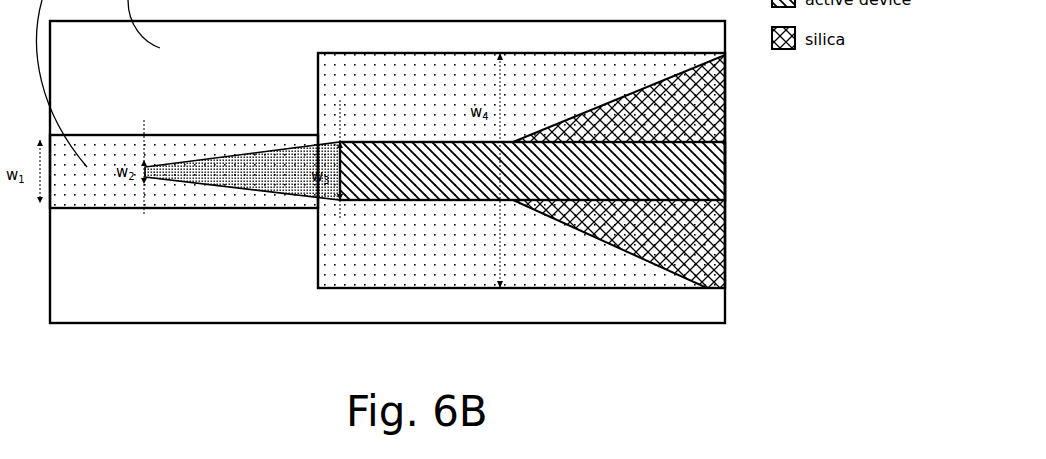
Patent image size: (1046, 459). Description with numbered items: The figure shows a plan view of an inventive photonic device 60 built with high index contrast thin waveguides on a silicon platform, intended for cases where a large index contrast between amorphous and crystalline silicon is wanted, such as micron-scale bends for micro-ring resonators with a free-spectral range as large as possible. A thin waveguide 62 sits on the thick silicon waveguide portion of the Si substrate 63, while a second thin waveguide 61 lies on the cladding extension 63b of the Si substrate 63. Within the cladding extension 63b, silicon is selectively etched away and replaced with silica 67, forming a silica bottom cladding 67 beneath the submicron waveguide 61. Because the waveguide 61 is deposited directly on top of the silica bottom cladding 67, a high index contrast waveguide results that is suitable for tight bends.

The photonic device 60 is at (693, 343).
The high index contrast thin waveguide 61 is at (725, 161).
The high index contrast thin waveguide 62 is at (287, 163).
The Si substrate 63 is at (247, 218).
The cladding extension 63b is at (320, 238).
The silica bottom cladding 67 is at (725, 88).